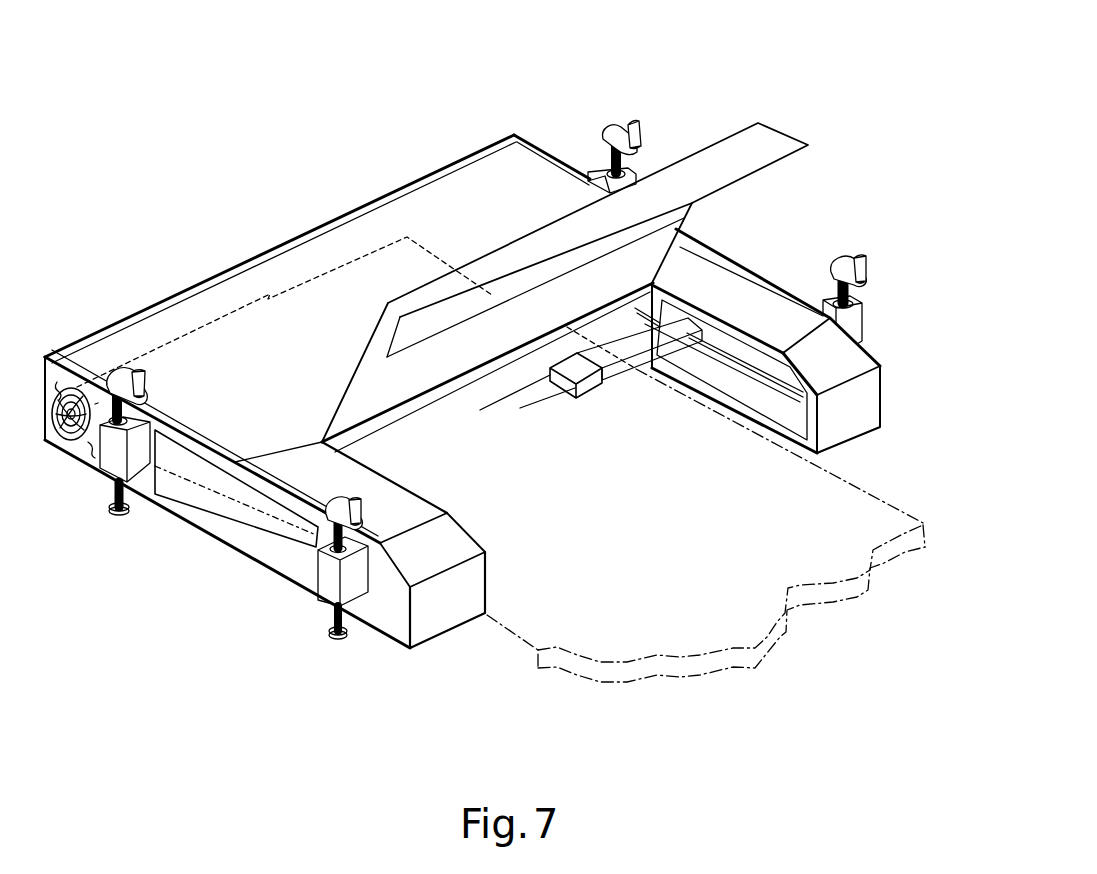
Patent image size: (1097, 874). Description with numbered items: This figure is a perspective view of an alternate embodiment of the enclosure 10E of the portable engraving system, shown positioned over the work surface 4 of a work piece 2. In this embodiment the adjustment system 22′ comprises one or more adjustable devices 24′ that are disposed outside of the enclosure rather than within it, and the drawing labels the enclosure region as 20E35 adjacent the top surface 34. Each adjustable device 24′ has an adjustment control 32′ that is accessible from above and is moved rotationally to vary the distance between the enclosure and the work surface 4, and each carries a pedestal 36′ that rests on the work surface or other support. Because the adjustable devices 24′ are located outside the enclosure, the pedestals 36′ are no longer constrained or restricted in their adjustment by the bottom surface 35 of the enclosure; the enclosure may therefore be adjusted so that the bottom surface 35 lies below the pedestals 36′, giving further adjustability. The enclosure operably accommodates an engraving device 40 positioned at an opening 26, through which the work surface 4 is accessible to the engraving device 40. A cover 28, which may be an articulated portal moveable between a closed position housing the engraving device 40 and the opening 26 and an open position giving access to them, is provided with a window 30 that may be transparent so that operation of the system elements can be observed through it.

The enclosure 10E is at (422, 165).
The work piece 2 is at (562, 678).
The work surface 4 is at (672, 592).
The frame 20E35 is at (260, 336).
The adjustable devices 24′ is at (612, 128).
The opening 26 is at (528, 452).
The cover 28 is at (781, 121).
The window 30 is at (451, 305).
The adjustment control 32′ is at (870, 267).
The top surface 34 is at (752, 294).
The bottom surface 35 is at (432, 650).
The pedestals 36′ is at (333, 633).
The engraving device 40 is at (590, 383).
The adjustment system 22′ is at (898, 300).